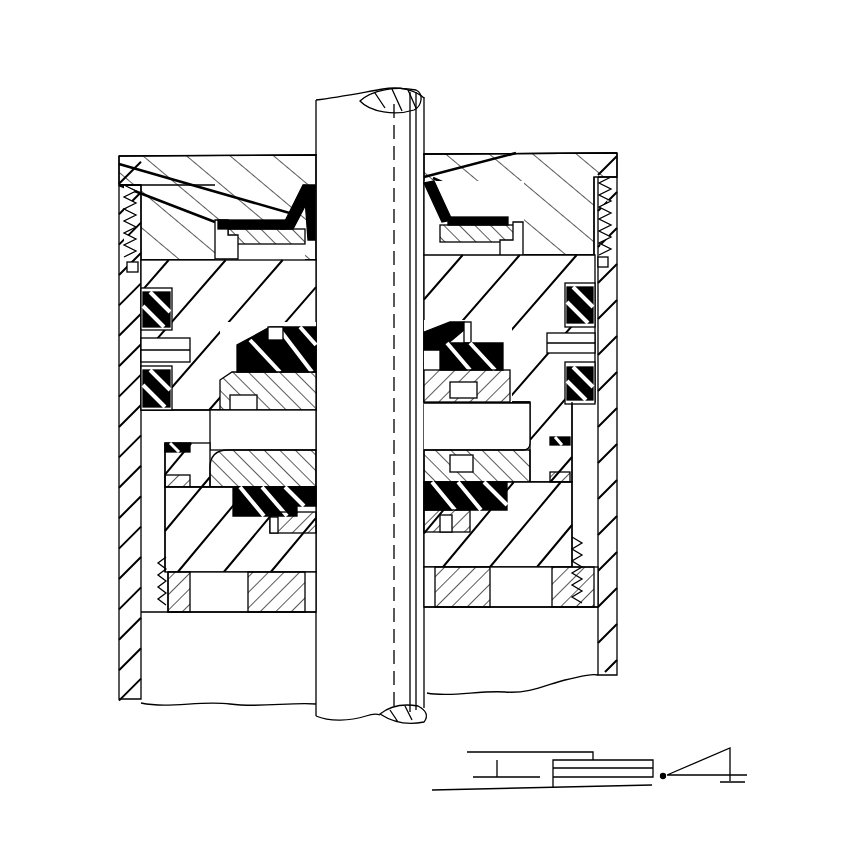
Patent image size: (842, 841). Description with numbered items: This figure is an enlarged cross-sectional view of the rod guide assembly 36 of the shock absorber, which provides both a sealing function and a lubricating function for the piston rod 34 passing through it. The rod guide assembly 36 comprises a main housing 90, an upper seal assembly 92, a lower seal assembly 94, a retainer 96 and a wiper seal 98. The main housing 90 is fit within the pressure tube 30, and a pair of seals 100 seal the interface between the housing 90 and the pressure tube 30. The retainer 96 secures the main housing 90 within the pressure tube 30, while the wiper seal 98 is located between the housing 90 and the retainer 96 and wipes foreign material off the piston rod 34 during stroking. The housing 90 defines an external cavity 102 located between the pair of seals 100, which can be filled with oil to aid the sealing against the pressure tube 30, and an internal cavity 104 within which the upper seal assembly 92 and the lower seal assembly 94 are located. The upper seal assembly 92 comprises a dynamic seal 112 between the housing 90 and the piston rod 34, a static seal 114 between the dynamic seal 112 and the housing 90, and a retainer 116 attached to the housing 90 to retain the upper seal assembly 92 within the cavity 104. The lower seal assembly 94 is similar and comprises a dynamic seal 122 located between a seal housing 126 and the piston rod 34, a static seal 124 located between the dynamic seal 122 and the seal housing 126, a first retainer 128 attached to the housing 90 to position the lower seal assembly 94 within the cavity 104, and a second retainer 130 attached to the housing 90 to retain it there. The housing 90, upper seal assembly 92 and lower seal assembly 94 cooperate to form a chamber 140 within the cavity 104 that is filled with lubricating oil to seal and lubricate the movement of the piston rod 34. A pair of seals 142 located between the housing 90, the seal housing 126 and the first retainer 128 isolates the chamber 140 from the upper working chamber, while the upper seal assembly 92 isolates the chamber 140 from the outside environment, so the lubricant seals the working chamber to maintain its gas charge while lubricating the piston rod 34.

The pressure tube 30 is at (606, 631).
The piston rod 34 is at (383, 692).
The rod guide assembly 36 is at (622, 120).
The main housing 90 is at (150, 418).
The upper seal assembly 92 is at (203, 360).
The lower seal assembly 94 is at (210, 519).
The retainer 96 is at (600, 170).
The wiper seal 98 is at (479, 126).
The seals 100 is at (140, 300).
The external cavity 102 is at (597, 343).
The internal cavity 104 is at (210, 430).
The dynamic seal 112 is at (428, 333).
The static seal 114 is at (432, 365).
The retainer 116 is at (432, 383).
The dynamic seal 122 is at (305, 523).
The static seal 124 is at (300, 503).
The seal housing 126 is at (300, 557).
The first retainer 128 is at (317, 472).
The second retainer 130 is at (272, 600).
The chamber 140 is at (490, 437).
The seals 142 is at (595, 470).